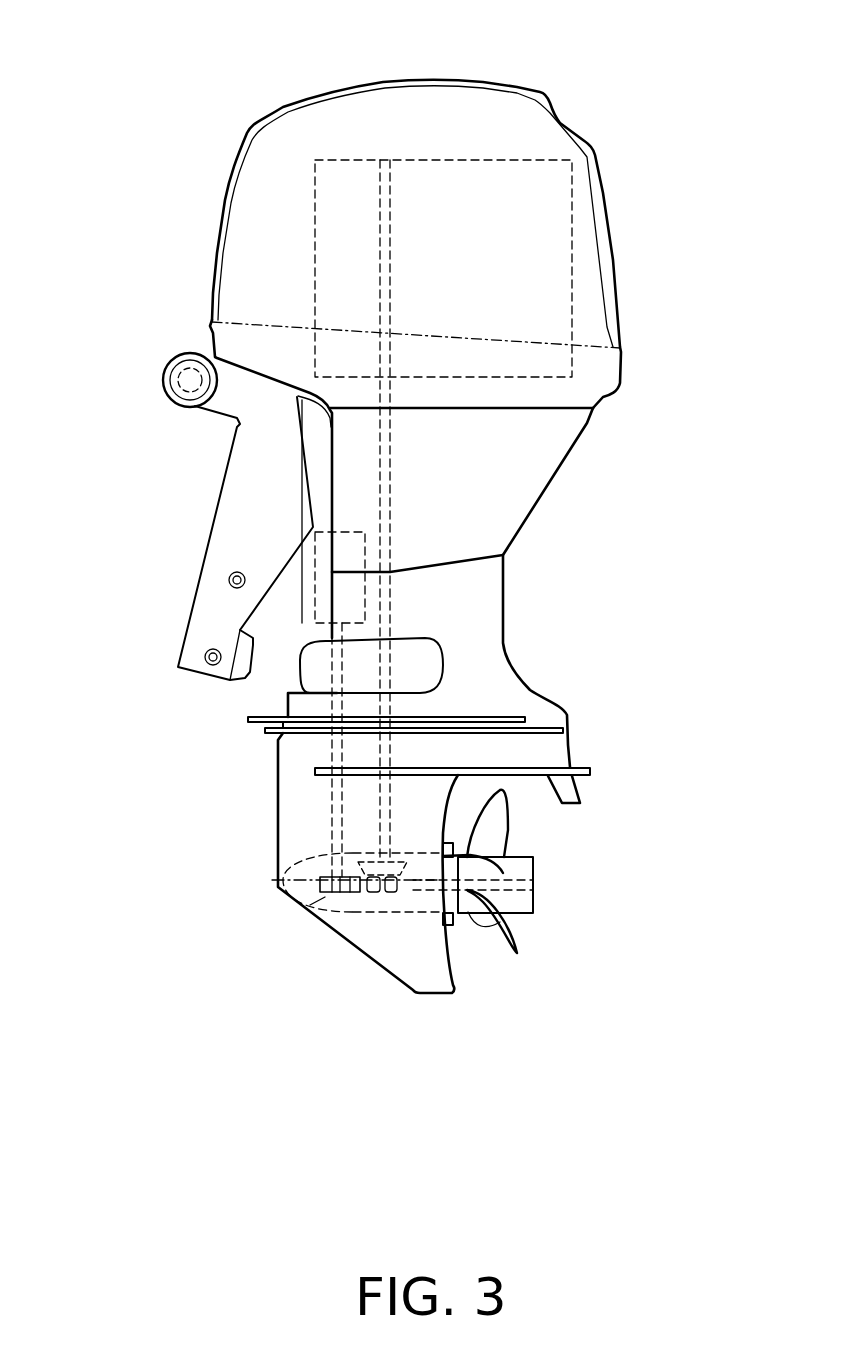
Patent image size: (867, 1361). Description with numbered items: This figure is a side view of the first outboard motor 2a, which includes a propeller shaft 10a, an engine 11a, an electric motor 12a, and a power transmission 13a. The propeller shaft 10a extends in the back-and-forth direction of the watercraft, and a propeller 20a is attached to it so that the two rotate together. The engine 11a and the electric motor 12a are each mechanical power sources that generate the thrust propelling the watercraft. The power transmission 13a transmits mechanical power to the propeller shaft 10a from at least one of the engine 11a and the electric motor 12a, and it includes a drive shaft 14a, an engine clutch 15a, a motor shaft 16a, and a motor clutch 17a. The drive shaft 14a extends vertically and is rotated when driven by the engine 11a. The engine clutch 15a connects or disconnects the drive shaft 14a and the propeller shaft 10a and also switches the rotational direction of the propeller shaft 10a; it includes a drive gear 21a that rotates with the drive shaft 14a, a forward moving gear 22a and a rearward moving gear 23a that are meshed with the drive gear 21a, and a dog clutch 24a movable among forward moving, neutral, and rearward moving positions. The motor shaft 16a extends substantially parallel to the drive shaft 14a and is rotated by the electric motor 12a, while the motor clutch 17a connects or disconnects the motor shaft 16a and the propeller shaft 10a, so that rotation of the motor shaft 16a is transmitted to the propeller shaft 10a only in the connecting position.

The first outboard motor 2a is at (217, 131).
The engine 11a is at (343, 158).
The drive shaft 14a is at (390, 497).
The electric motor 12a is at (315, 598).
The motor shaft 16a is at (333, 753).
The propeller shaft 10a is at (447, 963).
The propeller 20a is at (480, 907).
The drive gear 21a is at (367, 855).
The power transmission 13a is at (355, 910).
The motor clutch 17a is at (323, 873).
The engine clutch 15a is at (322, 895).
The dog clutch 24a is at (387, 897).
The forward moving gear 22a is at (360, 897).
The rearward moving gear 23a is at (407, 897).